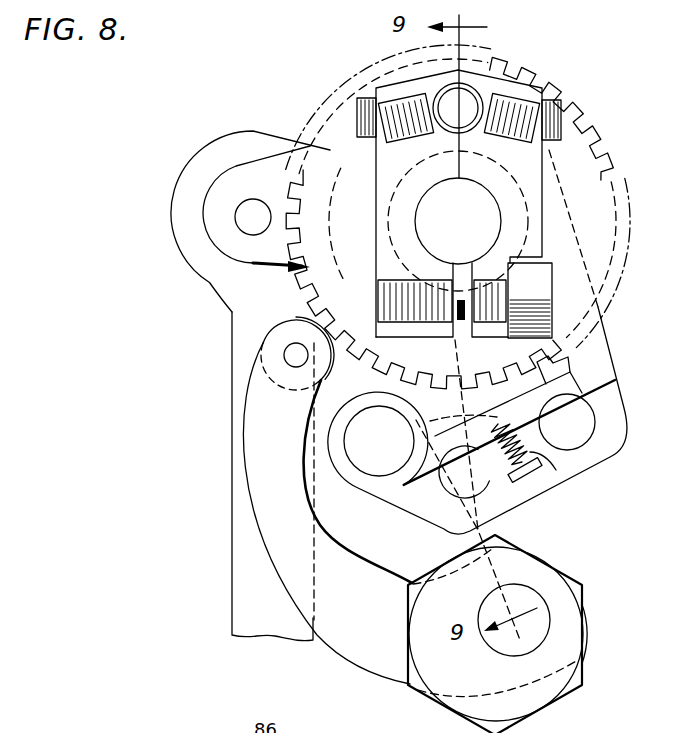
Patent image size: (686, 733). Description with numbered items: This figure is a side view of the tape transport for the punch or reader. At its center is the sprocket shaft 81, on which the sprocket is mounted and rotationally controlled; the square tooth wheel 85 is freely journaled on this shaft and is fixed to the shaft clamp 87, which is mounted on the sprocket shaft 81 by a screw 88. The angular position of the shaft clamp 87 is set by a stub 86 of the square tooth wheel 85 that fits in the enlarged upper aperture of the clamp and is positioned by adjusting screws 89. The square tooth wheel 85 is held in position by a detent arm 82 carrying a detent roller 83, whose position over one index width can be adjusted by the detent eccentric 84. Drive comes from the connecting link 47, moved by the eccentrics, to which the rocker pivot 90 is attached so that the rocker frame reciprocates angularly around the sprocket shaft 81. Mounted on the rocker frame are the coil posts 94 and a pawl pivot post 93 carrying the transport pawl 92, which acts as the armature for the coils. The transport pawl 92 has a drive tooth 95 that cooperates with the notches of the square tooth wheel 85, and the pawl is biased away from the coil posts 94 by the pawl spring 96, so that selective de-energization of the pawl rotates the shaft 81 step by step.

The punch tape transport connecting link 47 is at (243, 560).
The sprocket shaft 81 is at (462, 197).
The detent arm 82 is at (358, 653).
The detent roller 83 is at (280, 344).
The detent eccentric 84 is at (583, 675).
The square tooth wheel 85 is at (620, 139).
The stub 86 is at (467, 121).
The shaft clamp 87 is at (543, 200).
The screw 88 is at (543, 308).
The adjusting screws 89 is at (367, 131).
The rocker pivot 90 is at (256, 200).
The transport pawl 92 is at (392, 484).
The pawl pivot post 93 is at (390, 449).
The coil posts 94 is at (597, 423).
The drive tooth 95 is at (514, 384).
The pawl spring 96 is at (546, 471).